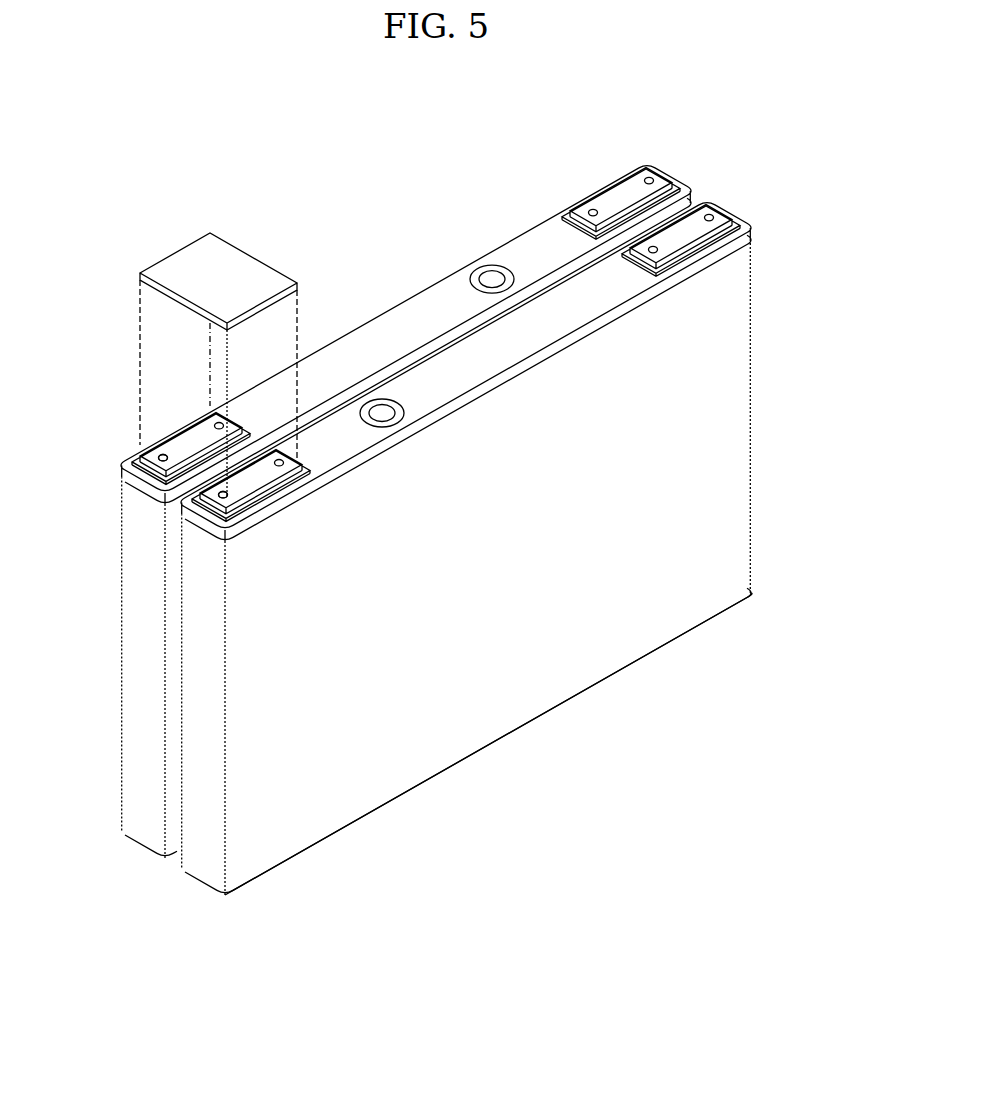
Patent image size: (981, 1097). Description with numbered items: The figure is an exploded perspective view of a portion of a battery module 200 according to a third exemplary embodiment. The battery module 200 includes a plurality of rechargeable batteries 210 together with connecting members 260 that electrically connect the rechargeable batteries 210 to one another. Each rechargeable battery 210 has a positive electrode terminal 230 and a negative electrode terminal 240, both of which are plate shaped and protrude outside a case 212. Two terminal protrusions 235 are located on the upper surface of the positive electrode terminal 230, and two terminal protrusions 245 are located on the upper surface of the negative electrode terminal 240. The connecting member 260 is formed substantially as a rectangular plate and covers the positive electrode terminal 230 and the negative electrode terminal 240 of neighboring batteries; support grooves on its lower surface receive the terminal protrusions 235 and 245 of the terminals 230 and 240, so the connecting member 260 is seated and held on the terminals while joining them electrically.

The battery module 200 is at (431, 539).
The rechargeable battery 210 is at (427, 575).
The case 212 is at (488, 744).
The positive electrode terminal 230 is at (436, 469).
The terminal protrusion 235 is at (139, 522).
The negative electrode terminal 240 is at (472, 345).
The terminal protrusion 245 is at (128, 422).
The connecting member 260 is at (218, 351).